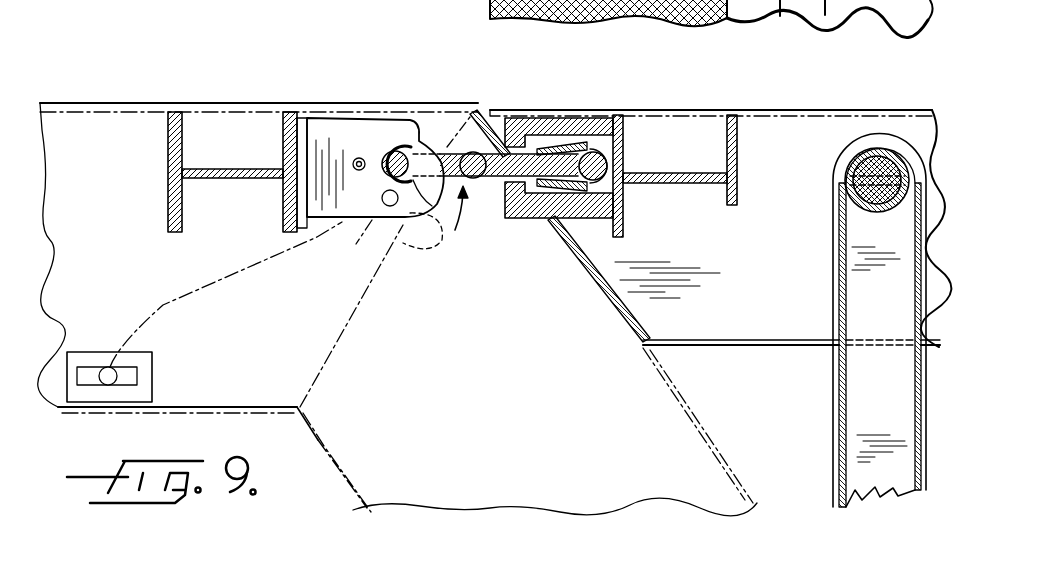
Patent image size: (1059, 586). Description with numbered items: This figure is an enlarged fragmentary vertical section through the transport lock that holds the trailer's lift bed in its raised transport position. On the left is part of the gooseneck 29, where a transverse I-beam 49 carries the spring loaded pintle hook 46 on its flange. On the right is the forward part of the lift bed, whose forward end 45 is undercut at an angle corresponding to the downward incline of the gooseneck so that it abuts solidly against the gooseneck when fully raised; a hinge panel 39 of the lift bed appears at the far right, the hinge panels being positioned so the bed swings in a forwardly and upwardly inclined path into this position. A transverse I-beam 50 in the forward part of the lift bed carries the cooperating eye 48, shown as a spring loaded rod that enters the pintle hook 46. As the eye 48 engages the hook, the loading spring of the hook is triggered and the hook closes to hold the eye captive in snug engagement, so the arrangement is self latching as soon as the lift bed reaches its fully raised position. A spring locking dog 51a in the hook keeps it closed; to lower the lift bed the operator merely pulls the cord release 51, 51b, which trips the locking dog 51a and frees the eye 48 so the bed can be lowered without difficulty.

The gooseneck 29 is at (165, 104).
The I-beam 49 is at (168, 196).
The pintle hook 46 is at (347, 222).
The spring locking dog 51a is at (359, 158).
The eye 48 is at (487, 178).
The transverse I-beam 50 is at (623, 227).
The forward end of the lift bed 45 is at (577, 255).
The hinge panel 39 is at (833, 300).
The cord release 51 is at (133, 376).
The cord release 51b is at (225, 277).